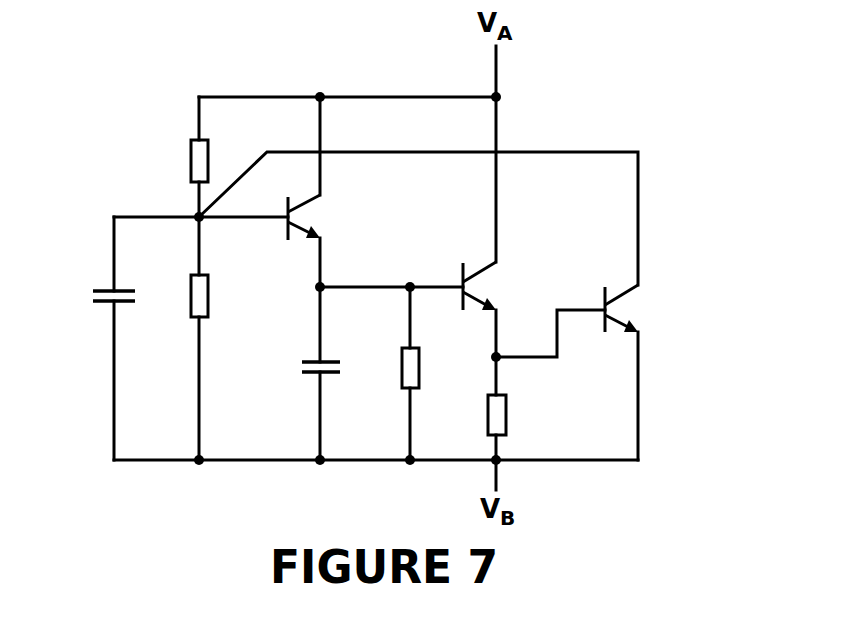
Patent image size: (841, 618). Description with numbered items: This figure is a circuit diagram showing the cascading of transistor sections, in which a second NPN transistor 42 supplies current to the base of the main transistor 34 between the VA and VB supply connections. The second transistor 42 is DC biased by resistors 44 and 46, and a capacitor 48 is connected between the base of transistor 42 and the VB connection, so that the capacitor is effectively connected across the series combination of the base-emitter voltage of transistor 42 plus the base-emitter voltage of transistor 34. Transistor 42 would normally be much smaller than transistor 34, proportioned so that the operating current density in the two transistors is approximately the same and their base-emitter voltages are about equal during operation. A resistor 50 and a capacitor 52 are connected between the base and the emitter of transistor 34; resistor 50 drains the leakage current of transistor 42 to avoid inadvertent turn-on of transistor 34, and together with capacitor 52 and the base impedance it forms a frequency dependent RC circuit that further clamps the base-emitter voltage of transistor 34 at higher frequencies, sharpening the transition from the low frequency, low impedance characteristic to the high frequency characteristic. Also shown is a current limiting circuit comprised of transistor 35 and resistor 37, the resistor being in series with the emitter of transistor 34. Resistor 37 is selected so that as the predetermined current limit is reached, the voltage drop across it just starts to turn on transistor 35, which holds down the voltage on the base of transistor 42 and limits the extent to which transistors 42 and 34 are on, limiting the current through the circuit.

The transistor 34 is at (487, 284).
The transistor 35 is at (630, 305).
The resistor 37 is at (488, 410).
The second NPN transistor 42 is at (315, 213).
The resistor 44 is at (191, 155).
The resistor 46 is at (210, 287).
The capacitor 48 is at (95, 290).
The resistor 50 is at (402, 363).
The capacitor 52 is at (310, 360).